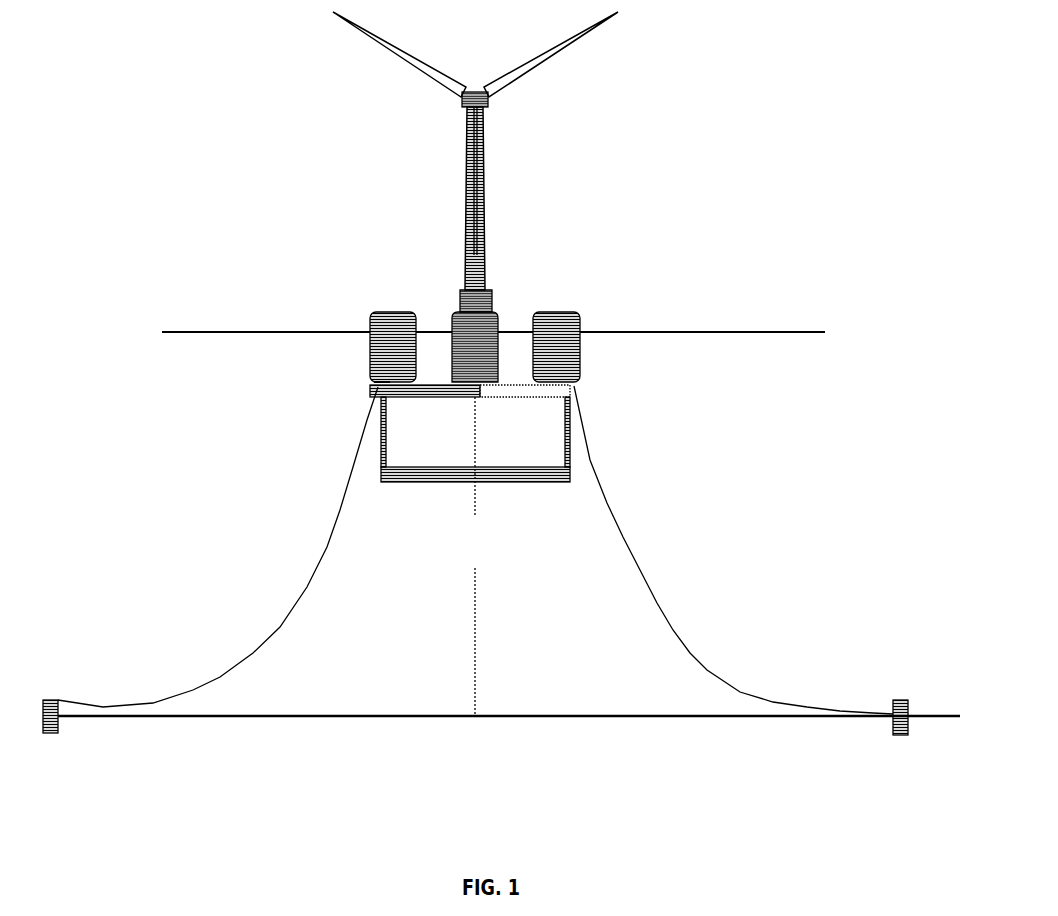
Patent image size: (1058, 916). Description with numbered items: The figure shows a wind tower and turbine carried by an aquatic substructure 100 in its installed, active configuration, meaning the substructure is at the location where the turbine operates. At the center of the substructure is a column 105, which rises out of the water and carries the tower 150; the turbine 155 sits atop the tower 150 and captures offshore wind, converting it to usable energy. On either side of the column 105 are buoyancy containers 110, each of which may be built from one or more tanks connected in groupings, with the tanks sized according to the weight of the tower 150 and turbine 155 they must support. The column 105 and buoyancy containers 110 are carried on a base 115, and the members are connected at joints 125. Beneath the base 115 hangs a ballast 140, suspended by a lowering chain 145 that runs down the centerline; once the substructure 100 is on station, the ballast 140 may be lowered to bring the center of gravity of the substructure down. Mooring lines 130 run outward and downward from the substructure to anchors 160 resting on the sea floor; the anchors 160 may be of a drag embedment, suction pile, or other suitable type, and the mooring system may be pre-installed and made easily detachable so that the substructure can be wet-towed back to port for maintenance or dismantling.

The aquatic substructure 100 is at (457, 382).
The column 105 is at (492, 297).
The buoyancy containers 110 is at (367, 328).
The base 115 is at (525, 395).
The joints 125 is at (382, 383).
The mooring lines 130 is at (640, 580).
The ballast 140 is at (378, 475).
The lowering chain 145 is at (470, 556).
The tower 150 is at (465, 167).
The turbine 155 is at (486, 97).
The anchors 160 is at (50, 697).